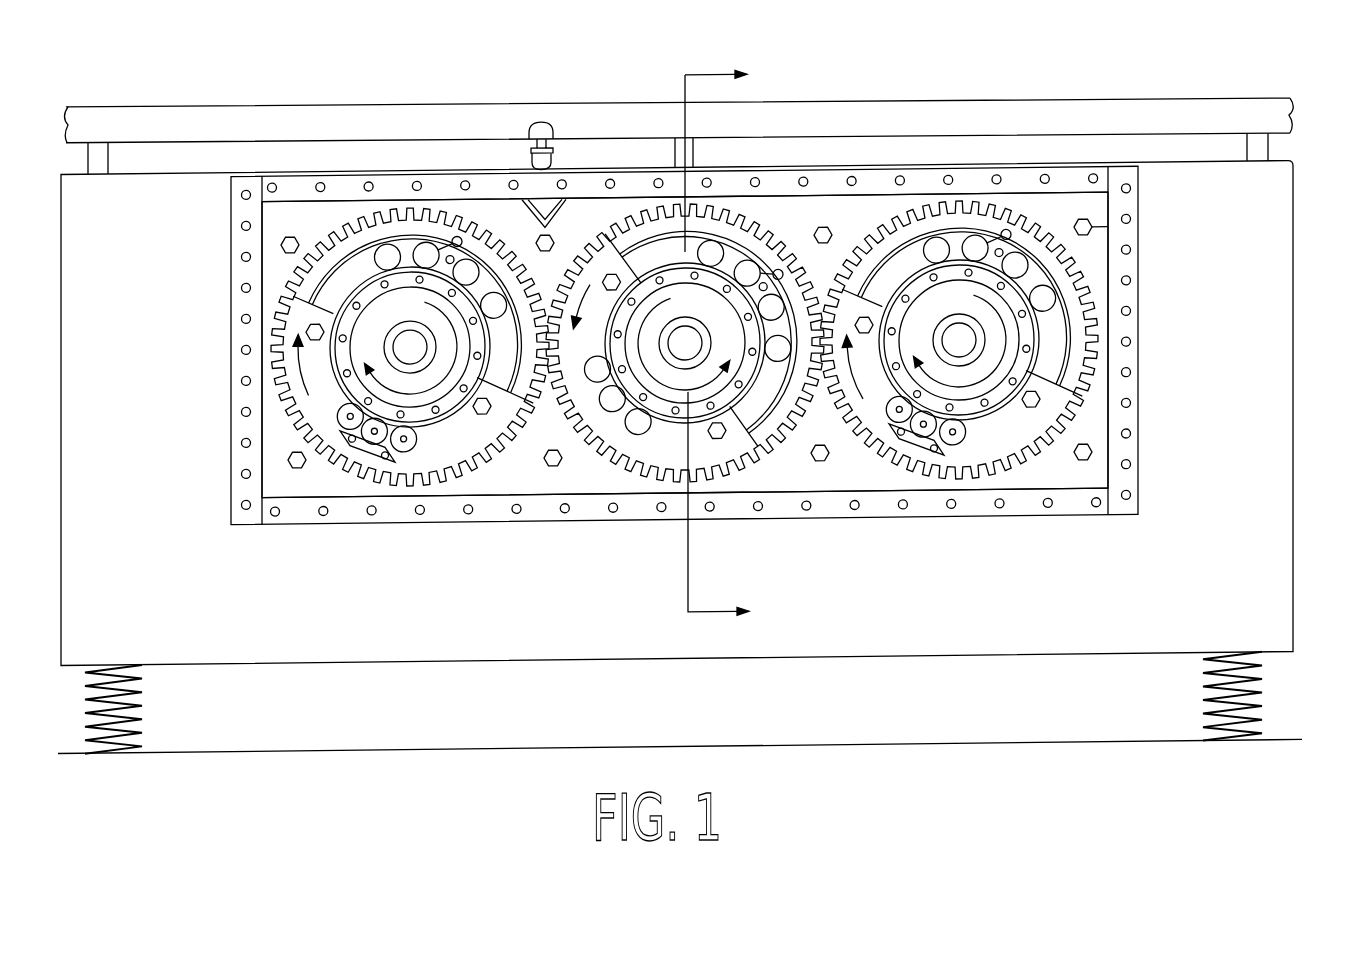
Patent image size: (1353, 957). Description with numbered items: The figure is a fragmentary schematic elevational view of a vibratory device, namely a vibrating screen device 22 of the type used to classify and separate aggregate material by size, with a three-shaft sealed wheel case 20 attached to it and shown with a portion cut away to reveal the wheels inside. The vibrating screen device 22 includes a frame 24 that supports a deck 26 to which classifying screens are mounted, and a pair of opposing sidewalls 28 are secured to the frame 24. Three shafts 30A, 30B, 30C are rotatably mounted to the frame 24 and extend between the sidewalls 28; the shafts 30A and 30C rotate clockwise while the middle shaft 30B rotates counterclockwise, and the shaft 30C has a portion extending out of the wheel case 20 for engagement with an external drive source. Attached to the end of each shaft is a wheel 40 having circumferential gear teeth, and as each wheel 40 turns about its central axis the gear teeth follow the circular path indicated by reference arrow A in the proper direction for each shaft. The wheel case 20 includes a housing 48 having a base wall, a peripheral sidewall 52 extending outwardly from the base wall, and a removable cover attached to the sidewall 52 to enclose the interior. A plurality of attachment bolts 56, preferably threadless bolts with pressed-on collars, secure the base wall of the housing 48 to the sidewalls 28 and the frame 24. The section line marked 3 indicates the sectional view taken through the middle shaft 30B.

The wheel case 20 is at (516, 526).
The vibrating screen device 22 is at (1308, 270).
The frame 24 is at (1293, 192).
The deck 26 is at (1038, 104).
The sidewalls 28 is at (680, 624).
The shaft 30A is at (417, 367).
The shaft 30B is at (683, 368).
The shaft 30C is at (963, 361).
The wheel 40 is at (807, 232).
The housing 48 is at (1145, 292).
The peripheral sidewall 52 is at (457, 166).
The attachment bolts 56 is at (281, 241).
The section line 3- 3 is at (726, 347).
The reference arrow A is at (300, 374).